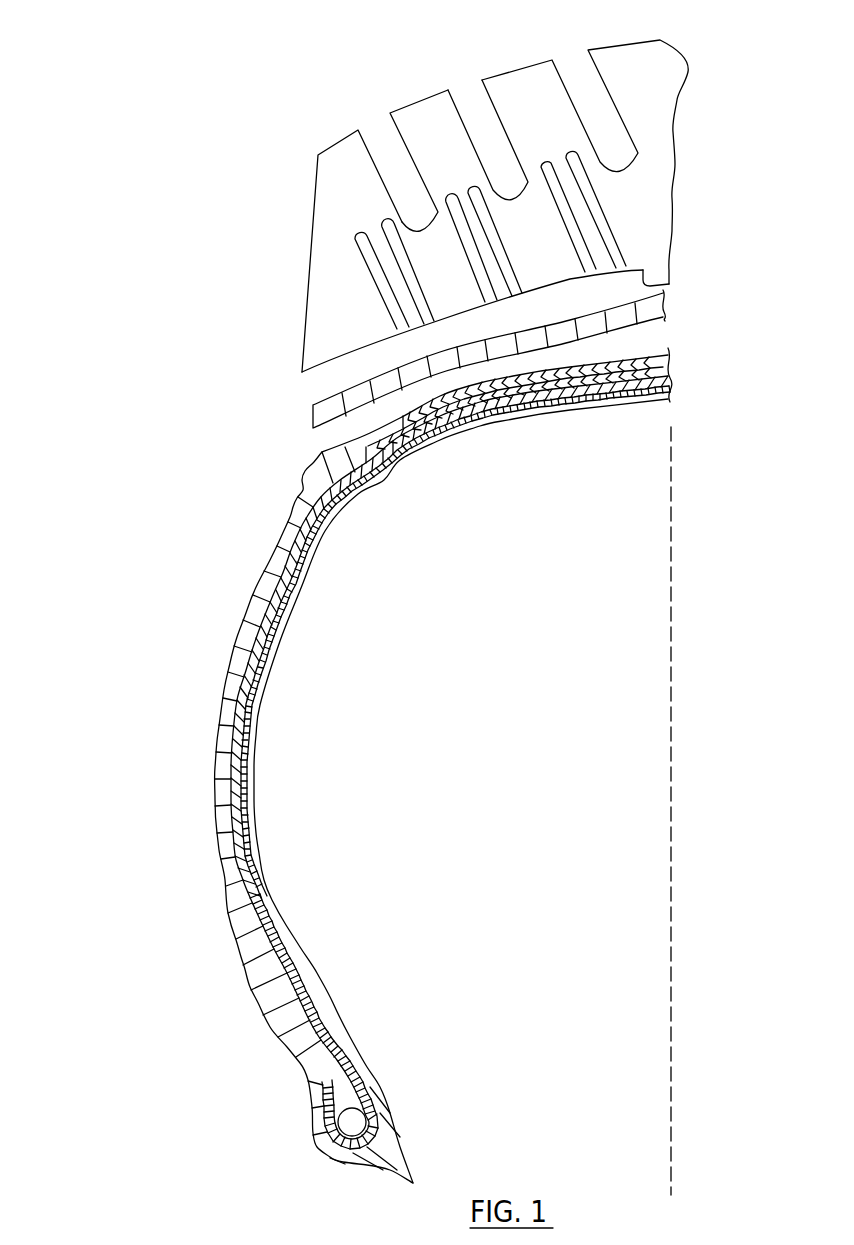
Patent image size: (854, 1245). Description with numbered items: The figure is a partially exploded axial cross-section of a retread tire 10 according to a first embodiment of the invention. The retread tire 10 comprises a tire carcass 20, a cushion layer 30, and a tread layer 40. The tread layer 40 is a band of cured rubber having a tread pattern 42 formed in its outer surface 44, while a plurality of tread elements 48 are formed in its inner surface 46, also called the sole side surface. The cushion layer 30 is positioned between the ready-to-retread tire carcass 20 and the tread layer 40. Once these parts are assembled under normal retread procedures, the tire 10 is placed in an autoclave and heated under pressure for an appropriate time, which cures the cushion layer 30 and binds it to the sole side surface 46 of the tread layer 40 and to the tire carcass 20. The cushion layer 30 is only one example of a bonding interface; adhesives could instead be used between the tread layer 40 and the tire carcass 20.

The retread tire 10 is at (138, 377).
The tire carcass 20 is at (233, 632).
The cushion layer 30 is at (312, 412).
The tread layer 40 is at (284, 261).
The tread pattern 42 is at (483, 127).
The outer surface 44 is at (342, 145).
The inner surface 46 is at (665, 283).
The tread elements 48 is at (596, 197).